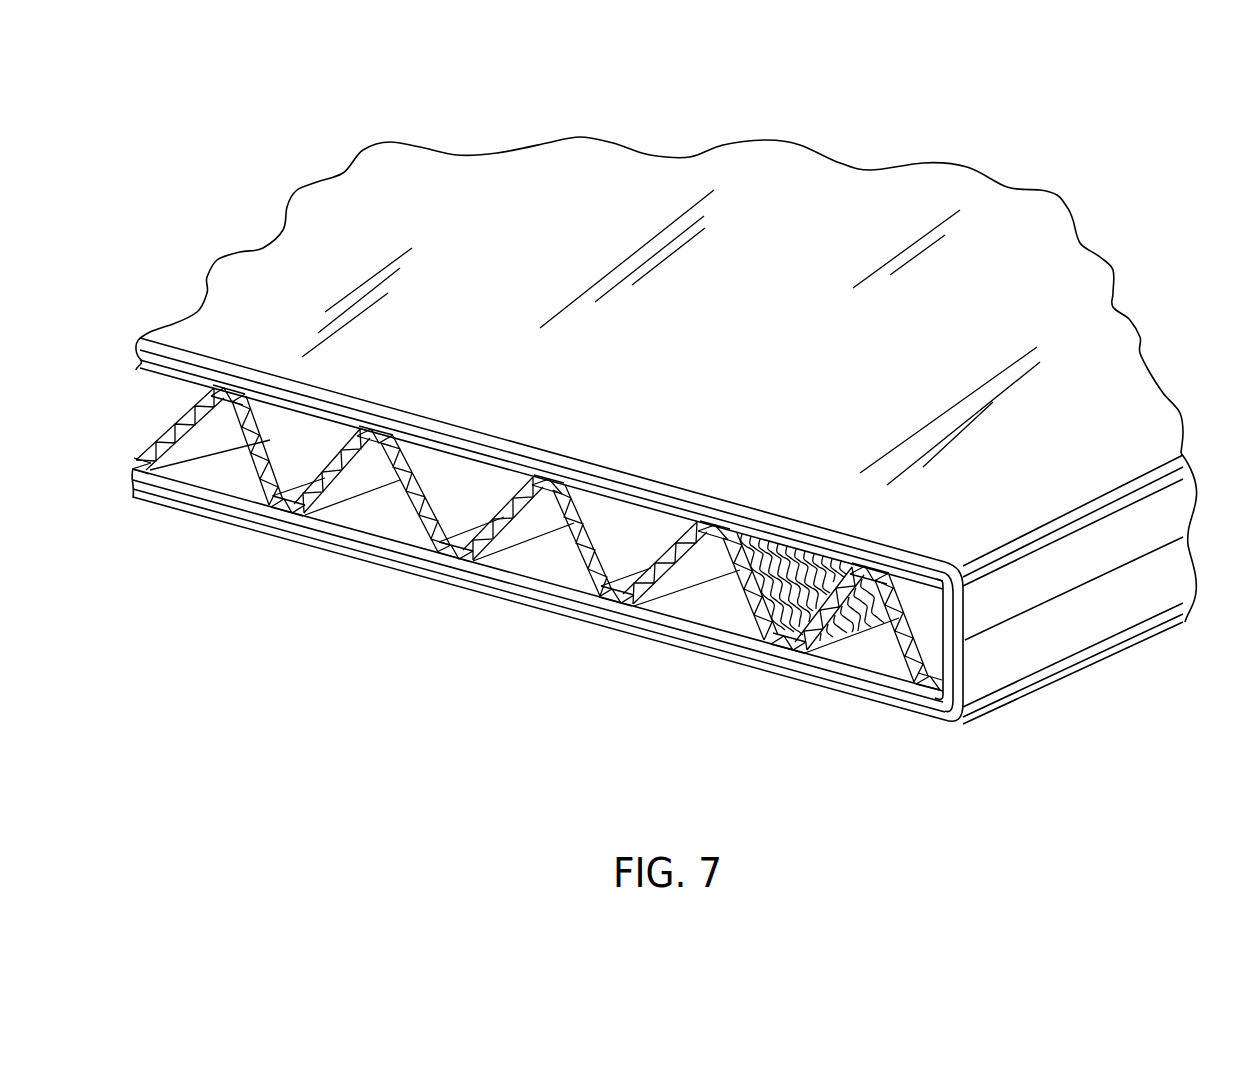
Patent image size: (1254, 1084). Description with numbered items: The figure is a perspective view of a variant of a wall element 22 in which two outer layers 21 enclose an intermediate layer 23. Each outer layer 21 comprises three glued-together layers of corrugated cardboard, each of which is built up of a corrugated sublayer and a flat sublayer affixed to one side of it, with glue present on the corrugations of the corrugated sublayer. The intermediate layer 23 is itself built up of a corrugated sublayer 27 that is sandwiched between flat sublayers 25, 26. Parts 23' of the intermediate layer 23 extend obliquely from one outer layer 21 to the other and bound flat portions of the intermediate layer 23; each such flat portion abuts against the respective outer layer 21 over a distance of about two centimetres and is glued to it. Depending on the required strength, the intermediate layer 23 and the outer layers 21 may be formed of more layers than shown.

The outer layer 21 is at (813, 351).
The wall element 22 is at (1035, 647).
The intermediate layer 23 is at (530, 536).
The parts of the intermediate layer 23' is at (532, 535).
The flat sublayer 25 is at (940, 690).
The flat sublayer 26 is at (941, 690).
The corrugated sublayer 27 is at (900, 593).